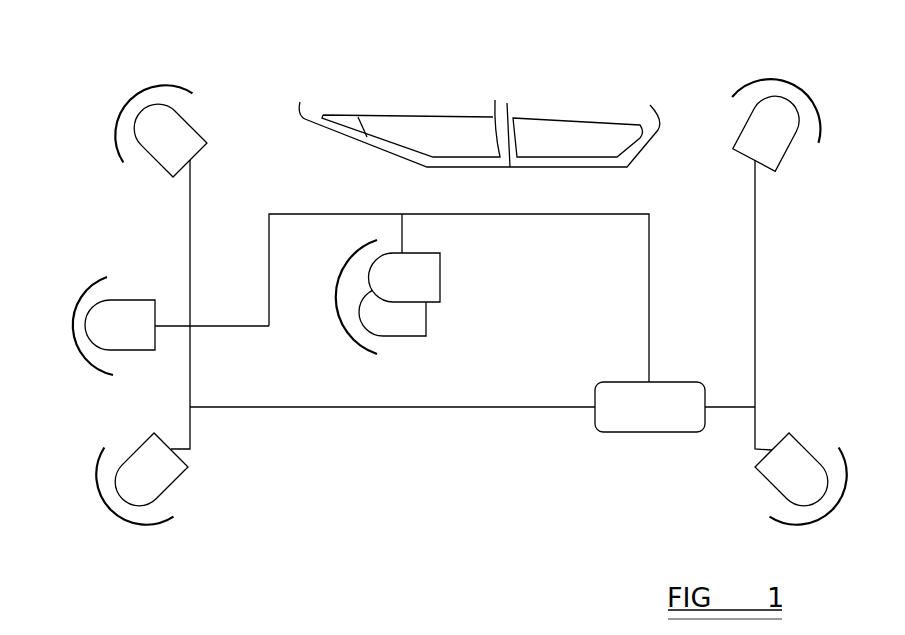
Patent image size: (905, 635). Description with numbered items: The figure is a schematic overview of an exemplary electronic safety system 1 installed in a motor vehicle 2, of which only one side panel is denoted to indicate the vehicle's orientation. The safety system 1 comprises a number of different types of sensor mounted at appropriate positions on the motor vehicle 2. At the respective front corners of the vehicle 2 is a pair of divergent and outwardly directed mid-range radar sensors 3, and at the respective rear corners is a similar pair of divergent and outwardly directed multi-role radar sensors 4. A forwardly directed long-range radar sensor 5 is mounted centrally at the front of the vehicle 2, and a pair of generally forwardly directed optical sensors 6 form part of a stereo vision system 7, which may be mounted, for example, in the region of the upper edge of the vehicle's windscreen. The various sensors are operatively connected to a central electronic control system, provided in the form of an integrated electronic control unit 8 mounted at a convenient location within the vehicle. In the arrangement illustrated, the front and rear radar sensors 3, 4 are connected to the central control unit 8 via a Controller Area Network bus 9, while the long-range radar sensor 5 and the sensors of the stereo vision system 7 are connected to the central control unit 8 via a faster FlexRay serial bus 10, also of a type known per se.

The electronic safety system 1 is at (267, 150).
The motor vehicle 2 is at (528, 118).
The mid-range radar sensors 3 is at (150, 117).
The multi-role radar sensors 4 is at (770, 110).
The long-range radar sensor 5 is at (120, 300).
The optical sensors 6 is at (440, 280).
The stereo vision system 7 is at (334, 307).
The electronic control unit 8 is at (625, 432).
The CAN bus 9 is at (755, 305).
The FlexRay serial bus 10 is at (312, 213).